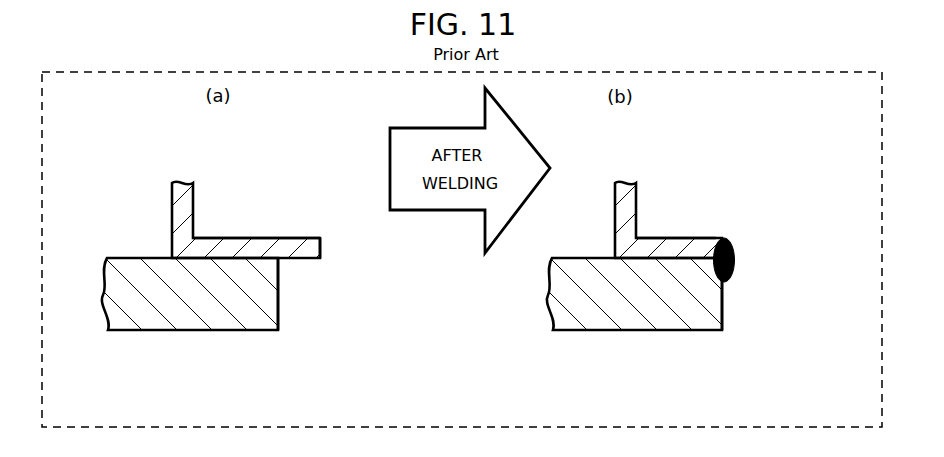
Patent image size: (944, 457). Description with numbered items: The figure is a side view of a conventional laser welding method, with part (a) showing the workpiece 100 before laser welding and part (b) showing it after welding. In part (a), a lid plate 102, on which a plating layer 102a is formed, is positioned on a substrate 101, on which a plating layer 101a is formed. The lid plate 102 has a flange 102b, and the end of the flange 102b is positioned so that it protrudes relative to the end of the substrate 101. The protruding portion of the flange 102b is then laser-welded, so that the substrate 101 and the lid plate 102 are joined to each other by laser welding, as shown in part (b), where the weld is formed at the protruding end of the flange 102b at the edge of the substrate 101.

The welded joint structure (prior art) 100 is at (211, 188).
The substrate 101 is at (258, 320).
The plating layer 101a is at (279, 306).
The lid plate 102 is at (237, 247).
The plating layer 102a is at (307, 240).
The flange 102b is at (320, 250).